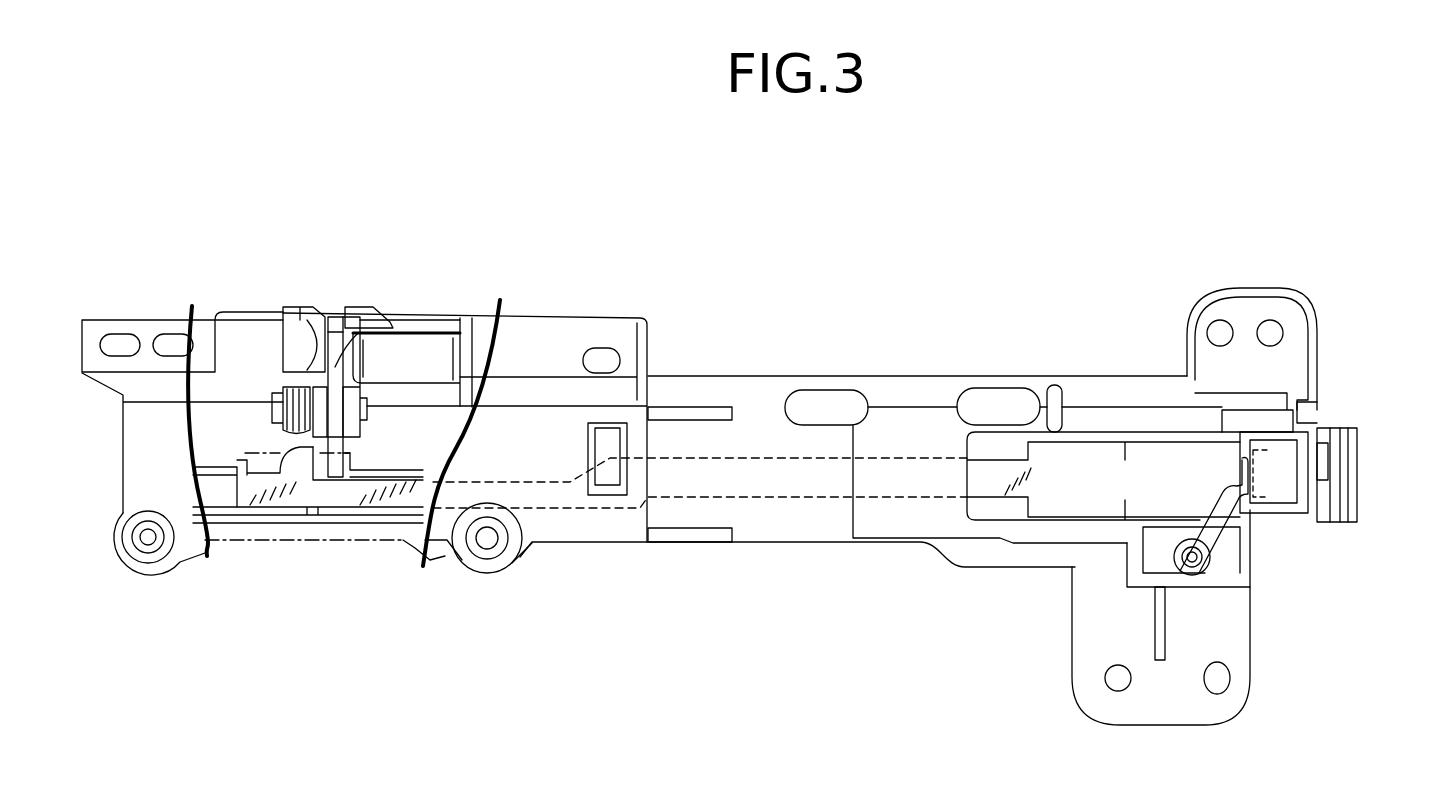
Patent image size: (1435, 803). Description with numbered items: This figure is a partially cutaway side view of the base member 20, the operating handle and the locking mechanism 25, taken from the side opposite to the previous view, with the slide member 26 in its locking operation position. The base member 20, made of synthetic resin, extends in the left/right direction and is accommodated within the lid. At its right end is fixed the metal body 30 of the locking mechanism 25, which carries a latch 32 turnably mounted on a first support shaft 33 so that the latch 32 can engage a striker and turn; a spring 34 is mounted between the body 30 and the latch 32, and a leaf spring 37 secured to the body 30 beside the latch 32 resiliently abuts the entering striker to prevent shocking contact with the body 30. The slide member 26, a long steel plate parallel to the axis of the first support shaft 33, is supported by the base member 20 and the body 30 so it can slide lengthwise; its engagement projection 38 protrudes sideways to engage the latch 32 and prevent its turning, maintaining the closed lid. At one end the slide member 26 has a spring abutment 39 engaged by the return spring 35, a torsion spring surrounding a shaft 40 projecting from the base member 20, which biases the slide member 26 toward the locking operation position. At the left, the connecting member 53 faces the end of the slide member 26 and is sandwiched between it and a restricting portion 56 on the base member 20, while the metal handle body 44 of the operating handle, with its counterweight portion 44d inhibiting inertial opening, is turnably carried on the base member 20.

The base member 20 is at (743, 382).
The locking mechanism 25 is at (268, 353).
The slide member 26 is at (1010, 487).
The body 30 is at (545, 342).
The latch 32 is at (337, 363).
The first support shaft 33 is at (367, 410).
The spring 34 is at (313, 367).
The return spring 35 is at (1205, 577).
The leaf spring 37 is at (437, 347).
The engagement projection 38 is at (347, 458).
The spring abutment 39 is at (1265, 465).
The shaft 40 is at (1198, 567).
The handle body 44 is at (1370, 458).
The counterweight portion 44d is at (1352, 490).
The connecting member 53 is at (1288, 495).
The restricting portion 56 is at (1318, 465).